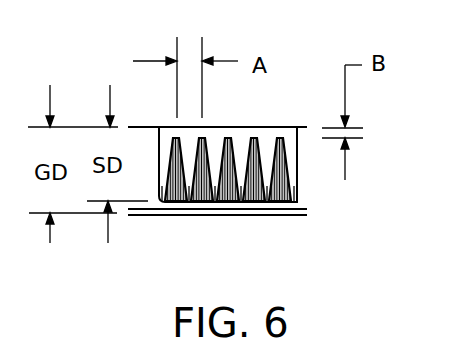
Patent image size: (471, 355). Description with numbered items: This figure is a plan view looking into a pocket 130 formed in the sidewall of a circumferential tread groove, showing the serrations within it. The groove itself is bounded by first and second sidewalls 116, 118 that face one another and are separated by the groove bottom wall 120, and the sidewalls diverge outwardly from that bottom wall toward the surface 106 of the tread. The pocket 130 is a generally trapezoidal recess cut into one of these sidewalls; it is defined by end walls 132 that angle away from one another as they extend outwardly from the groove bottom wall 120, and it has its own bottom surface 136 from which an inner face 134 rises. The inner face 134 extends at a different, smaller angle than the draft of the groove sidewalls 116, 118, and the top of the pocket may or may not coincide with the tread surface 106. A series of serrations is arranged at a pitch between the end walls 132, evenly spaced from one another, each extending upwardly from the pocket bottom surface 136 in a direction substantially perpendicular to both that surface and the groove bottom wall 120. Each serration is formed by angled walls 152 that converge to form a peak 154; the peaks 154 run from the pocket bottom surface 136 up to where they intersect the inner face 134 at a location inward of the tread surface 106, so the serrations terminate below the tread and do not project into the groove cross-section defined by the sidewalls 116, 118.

The surface of the tread 106 is at (268, 127).
The first sidewall 116 is at (142, 137).
The second sidewall 118 is at (142, 137).
The groove bottom wall 120 is at (139, 212).
The pocket 130 is at (316, 178).
The end walls 132 is at (159, 162).
The inner face 134 is at (213, 131).
The bottom surface of the pocket 136 is at (310, 225).
The angled walls 152 is at (208, 203).
The peak 154 is at (253, 203).